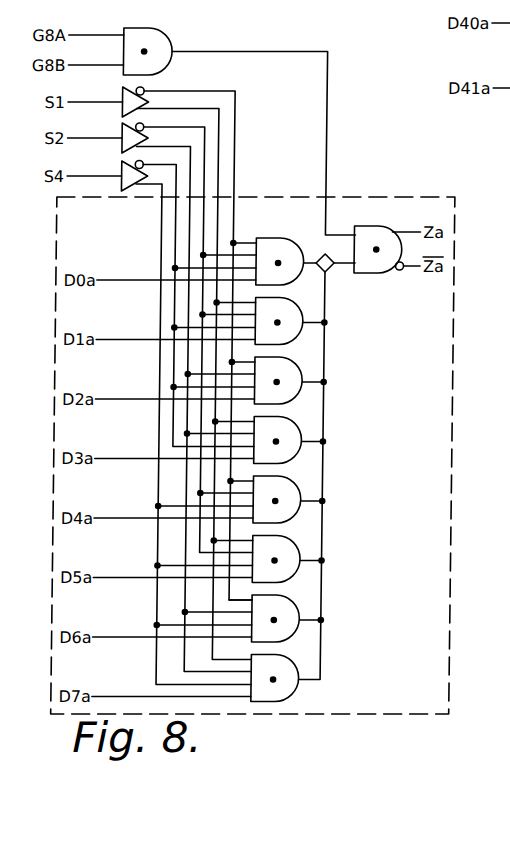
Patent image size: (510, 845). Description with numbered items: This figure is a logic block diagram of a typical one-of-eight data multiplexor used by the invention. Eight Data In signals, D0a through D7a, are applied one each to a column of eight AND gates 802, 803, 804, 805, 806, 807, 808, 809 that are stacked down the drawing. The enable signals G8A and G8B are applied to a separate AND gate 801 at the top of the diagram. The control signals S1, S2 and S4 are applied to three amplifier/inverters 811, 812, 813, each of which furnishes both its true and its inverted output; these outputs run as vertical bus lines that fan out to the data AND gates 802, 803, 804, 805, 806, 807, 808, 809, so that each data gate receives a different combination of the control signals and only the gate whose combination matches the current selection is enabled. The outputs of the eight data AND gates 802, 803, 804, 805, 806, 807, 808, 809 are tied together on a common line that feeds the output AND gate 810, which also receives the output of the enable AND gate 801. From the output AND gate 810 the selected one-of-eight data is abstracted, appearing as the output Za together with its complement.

The AND gate 801 is at (150, 34).
The AND gate 802 is at (283, 243).
The AND gate 803 is at (302, 313).
The AND gate 804 is at (302, 380).
The AND gate 805 is at (302, 437).
The AND gate 806 is at (296, 502).
The AND gate 807 is at (297, 560).
The AND gate 808 is at (299, 620).
The AND gate 809 is at (300, 677).
The AND gate 810 is at (375, 233).
The amplifier/inverter 811 is at (142, 88).
The amplifier/inverter 812 is at (120, 128).
The amplifier/inverter 813 is at (120, 165).